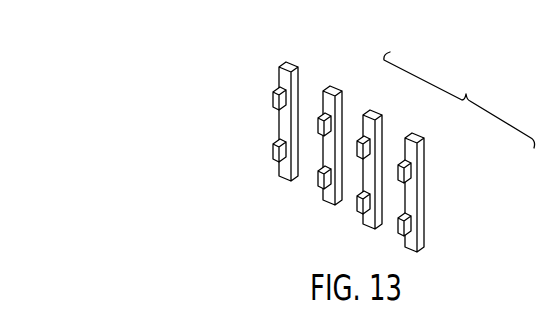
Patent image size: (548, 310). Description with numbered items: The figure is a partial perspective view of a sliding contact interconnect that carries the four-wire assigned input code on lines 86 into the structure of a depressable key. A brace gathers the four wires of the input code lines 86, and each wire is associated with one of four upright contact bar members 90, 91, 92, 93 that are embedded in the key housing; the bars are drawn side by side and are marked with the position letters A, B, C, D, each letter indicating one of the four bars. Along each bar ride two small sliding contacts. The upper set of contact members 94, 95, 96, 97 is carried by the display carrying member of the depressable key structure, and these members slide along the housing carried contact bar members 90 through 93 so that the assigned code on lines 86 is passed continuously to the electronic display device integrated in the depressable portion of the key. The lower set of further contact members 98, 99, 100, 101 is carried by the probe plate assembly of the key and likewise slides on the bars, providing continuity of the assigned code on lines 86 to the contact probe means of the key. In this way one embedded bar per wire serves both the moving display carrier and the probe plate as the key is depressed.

The input code lines 86 is at (459, 100).
The contact bar member 90 is at (285, 62).
The contact bar member 91 is at (333, 88).
The contact bar member 92 is at (376, 112).
The contact bar member 93 is at (417, 138).
The contact member 94 is at (273, 100).
The contact member 95 is at (318, 128).
The contact member 96 is at (359, 158).
The contact member 97 is at (403, 183).
The contact member 98 is at (273, 152).
The contact member 99 is at (318, 178).
The contact member 100 is at (360, 206).
The contact member 101 is at (399, 233).
The position A is at (343, 99).
The position B is at (383, 126).
The position C is at (425, 151).
The position D is at (425, 195).